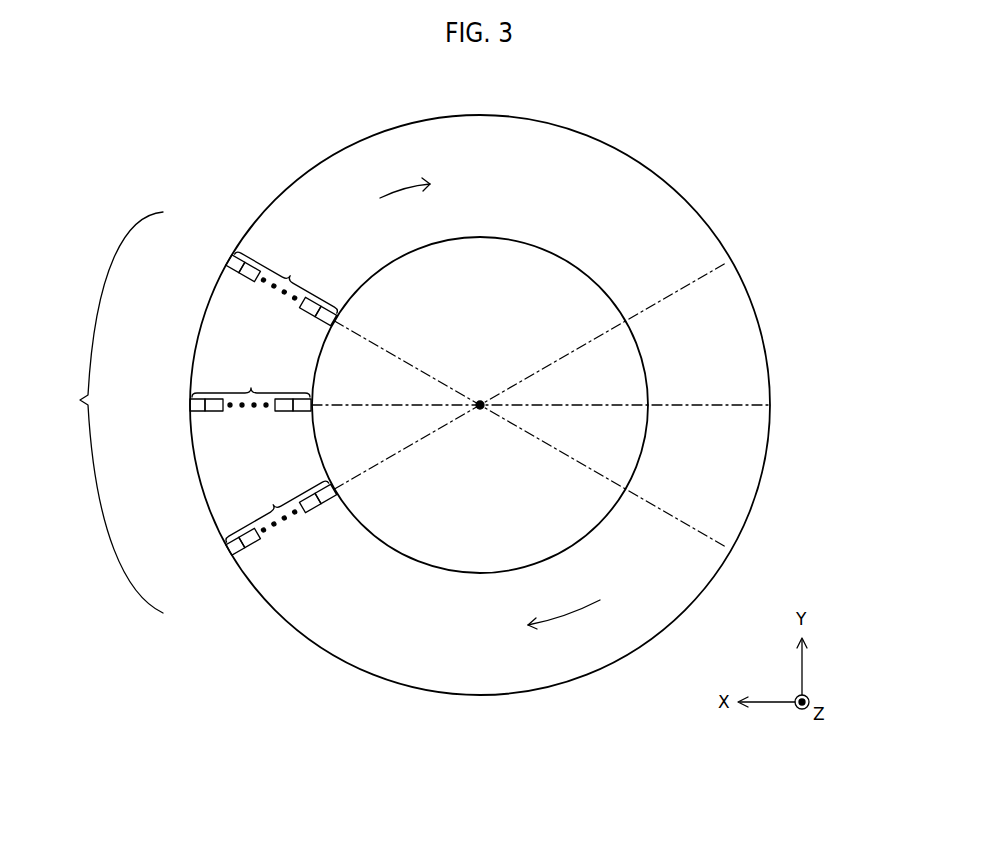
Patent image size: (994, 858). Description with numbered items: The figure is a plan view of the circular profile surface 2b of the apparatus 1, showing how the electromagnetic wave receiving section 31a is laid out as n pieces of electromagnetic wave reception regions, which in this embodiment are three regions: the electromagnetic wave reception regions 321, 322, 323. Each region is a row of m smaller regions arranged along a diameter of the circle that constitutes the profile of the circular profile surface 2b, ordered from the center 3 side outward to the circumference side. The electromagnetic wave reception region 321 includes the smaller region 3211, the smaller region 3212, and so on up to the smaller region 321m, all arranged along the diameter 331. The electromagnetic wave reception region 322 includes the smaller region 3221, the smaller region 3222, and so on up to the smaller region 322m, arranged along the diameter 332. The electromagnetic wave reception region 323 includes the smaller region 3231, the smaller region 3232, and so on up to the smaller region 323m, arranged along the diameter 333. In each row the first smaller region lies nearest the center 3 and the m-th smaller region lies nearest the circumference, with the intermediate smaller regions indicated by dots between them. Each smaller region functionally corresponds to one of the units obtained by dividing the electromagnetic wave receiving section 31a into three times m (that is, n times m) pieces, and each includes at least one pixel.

The rotary encoder 1 is at (480, 379).
The circular profile surface 2b is at (657, 184).
The center 3 is at (483, 400).
The electromagnetic wave receiving section 31a is at (212, 412).
The electromagnetic wave reception region 321 is at (207, 411).
The electromagnetic wave reception region 322 is at (225, 303).
The electromagnetic wave reception region 323 is at (262, 535).
The smaller region 321m is at (193, 411).
The smaller region 3211 is at (302, 412).
The smaller region 3212 is at (284, 412).
The smaller region 322m is at (232, 270).
The smaller region 3221 is at (323, 322).
The smaller region 3222 is at (307, 313).
The smaller region 323m is at (238, 551).
The smaller region 3231 is at (329, 500).
The smaller region 3232 is at (313, 509).
The diameter 331 is at (697, 405).
The diameter 332 is at (667, 512).
The diameter 333 is at (666, 299).